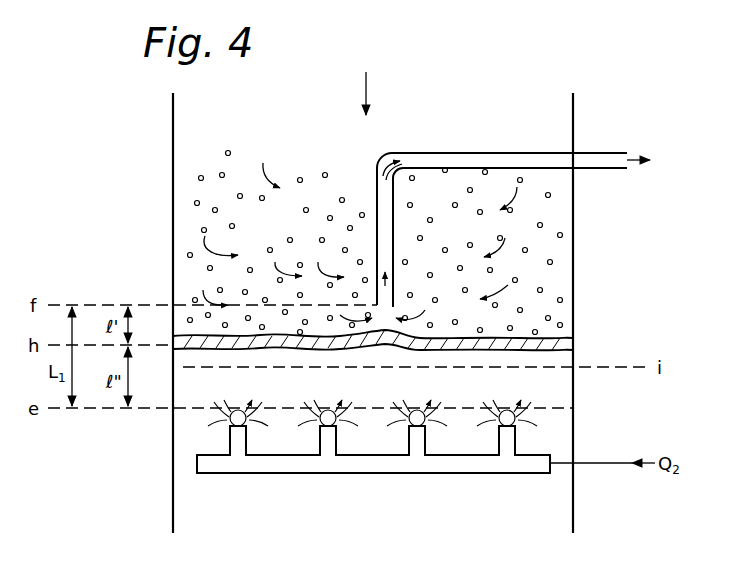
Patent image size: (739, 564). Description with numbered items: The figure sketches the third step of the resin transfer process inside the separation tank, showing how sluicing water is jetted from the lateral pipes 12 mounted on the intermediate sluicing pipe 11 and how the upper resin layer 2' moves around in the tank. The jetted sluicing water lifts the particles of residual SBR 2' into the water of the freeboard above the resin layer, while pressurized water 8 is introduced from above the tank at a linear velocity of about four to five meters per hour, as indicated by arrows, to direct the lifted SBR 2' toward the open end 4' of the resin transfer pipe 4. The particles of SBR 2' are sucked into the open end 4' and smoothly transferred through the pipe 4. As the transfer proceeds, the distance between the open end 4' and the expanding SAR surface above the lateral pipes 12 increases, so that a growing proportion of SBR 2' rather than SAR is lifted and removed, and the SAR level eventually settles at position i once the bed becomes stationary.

The pressurized water 8 is at (364, 82).
The resin transfer pipe 4 is at (513, 203).
The open end of resin transfer pipe 4' is at (413, 197).
The upper resin layer (SBR) 2' is at (396, 278).
The intermediate sluicing pipe 11 is at (469, 473).
The lateral pipes 12 is at (418, 427).